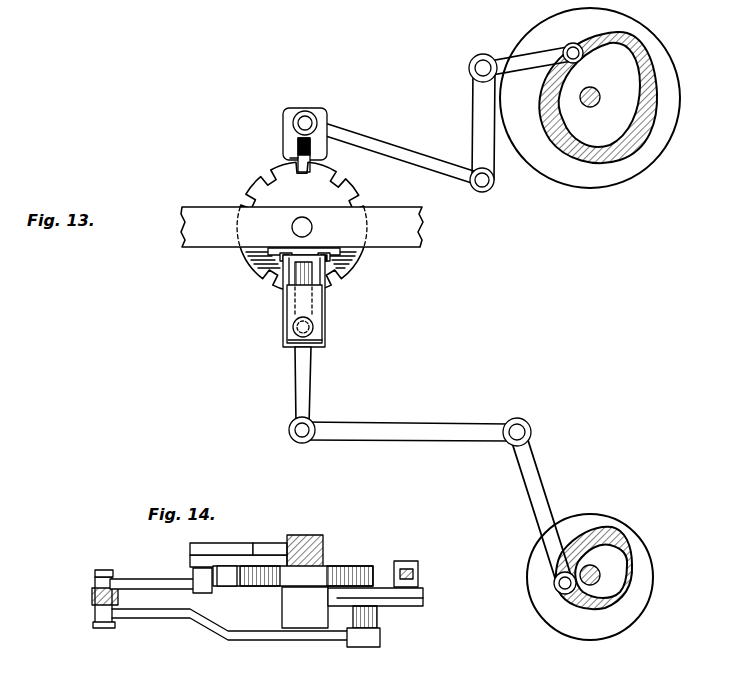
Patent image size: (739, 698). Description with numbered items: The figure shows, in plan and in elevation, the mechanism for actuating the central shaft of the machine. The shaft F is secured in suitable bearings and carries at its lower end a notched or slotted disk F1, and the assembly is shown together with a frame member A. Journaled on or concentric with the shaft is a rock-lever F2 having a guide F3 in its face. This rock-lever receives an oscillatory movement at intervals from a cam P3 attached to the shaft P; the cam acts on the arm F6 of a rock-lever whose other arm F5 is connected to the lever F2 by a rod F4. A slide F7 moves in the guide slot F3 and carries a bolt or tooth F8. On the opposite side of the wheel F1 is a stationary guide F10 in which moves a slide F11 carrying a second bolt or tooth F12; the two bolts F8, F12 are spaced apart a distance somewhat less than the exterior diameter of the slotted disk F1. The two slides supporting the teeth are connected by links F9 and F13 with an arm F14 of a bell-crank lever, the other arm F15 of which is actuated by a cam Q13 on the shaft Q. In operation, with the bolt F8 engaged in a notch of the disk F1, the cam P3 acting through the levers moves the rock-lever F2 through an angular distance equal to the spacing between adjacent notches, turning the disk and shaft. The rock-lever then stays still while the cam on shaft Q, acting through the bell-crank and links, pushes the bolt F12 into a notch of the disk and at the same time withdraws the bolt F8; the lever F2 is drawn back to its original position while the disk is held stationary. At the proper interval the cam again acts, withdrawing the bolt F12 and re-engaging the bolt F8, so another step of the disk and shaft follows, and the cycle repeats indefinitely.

In FIG. 13, the frame bar A is at (302, 227).
In FIG. 14, the frame bar A is at (308, 536).
In FIG. 13, the shaft F is at (292, 228).
In FIG. 13, the notched or slotted disk F1 is at (302, 227).
In FIG. 14, the notched or slotted disk F1 is at (293, 576).
In FIG. 13, the rock-lever F2 is at (322, 112).
In FIG. 14, the rock-lever F2 is at (375, 594).
In FIG. 13, the guide F3 is at (285, 140).
In FIG. 13, the rod F4 is at (448, 172).
In FIG. 13, the arm of rock-lever F5 is at (474, 108).
In FIG. 13, the arm of rock-lever F6 is at (548, 56).
In FIG. 13, the slide F7 is at (311, 150).
In FIG. 14, the slide F7 is at (378, 608).
In FIG. 13, the bolt or tooth F8 is at (296, 160).
In FIG. 14, the bolt or tooth F8 is at (405, 562).
In FIG. 13, the link F9 is at (304, 297).
In FIG. 14, the link F9 is at (298, 640).
In FIG. 13, the stationary guide F10 is at (290, 340).
In FIG. 14, the stationary guide F10 is at (266, 556).
In FIG. 13, the slide F11 is at (300, 308).
In FIG. 14, the slide F11 is at (218, 553).
In FIG. 13, the bolt or tooth F12 is at (292, 324).
In FIG. 14, the bolt or tooth F12 is at (240, 582).
In FIG. 13, the link F13 is at (300, 388).
In FIG. 14, the link F13 is at (142, 578).
In FIG. 13, the arm of bell-crank lever F14 is at (412, 437).
In FIG. 14, the arm of bell-crank lever F14 is at (120, 598).
In FIG. 13, the arm of bell-crank lever F15 is at (530, 508).
In FIG. 13, the shaft P is at (591, 88).
In FIG. 13, the cam P3 is at (596, 44).
In FIG. 13, the shaft Q is at (598, 612).
In FIG. 13, the cam groove Q13 is at (605, 530).